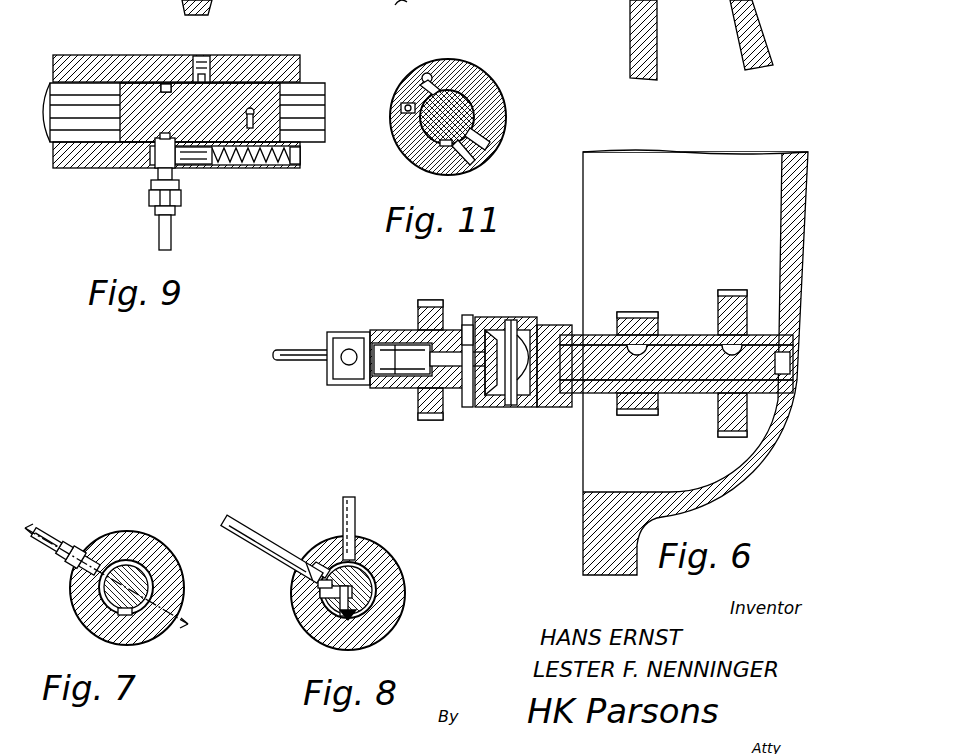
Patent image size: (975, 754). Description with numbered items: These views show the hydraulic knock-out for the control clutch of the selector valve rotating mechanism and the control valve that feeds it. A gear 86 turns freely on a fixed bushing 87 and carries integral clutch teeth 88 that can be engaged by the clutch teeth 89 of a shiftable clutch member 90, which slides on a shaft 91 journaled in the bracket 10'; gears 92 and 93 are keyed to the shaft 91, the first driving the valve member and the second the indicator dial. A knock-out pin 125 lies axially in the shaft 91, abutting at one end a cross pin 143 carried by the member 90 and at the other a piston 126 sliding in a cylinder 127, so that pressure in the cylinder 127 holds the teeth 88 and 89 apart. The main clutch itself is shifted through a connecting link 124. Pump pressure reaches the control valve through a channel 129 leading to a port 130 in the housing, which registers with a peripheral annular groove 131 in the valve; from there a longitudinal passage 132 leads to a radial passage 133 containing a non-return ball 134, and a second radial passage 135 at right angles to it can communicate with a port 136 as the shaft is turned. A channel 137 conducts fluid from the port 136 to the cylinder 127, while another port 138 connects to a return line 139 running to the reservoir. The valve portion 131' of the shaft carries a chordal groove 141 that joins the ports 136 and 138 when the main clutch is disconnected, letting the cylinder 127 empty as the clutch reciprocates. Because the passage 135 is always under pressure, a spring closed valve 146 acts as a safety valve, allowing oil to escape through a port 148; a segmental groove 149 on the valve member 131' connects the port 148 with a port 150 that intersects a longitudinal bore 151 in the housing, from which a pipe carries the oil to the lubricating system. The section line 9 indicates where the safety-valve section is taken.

In FIG. 7, the section line 9— 9 is at (110, 565).
In FIG. 6, the bracket 10' is at (695, 362).
In FIG. 6, the gear 86 is at (428, 300).
In FIG. 6, the fixed bushing 87 is at (420, 330).
In FIG. 6, the clutch teeth 88 is at (468, 315).
In FIG. 6, the clutch teeth 89 is at (480, 317).
In FIG. 6, the shiftable clutch member 90 is at (528, 317).
In FIG. 6, the shaft 91 is at (578, 335).
In FIG. 6, the gear 92 is at (638, 415).
In FIG. 6, the gear 93 is at (720, 425).
In FIG. 6, the connecting link 124 is at (630, 28).
In FIG. 6, the knock-out pin 125 is at (505, 405).
In FIG. 6, the piston 126 is at (404, 388).
In FIG. 6, the cylinder 127 is at (378, 332).
In FIG. 9, the channel 129 is at (158, 237).
In FIG. 7, the channel 129 is at (50, 553).
In FIG. 9, the port 130 is at (200, 112).
In FIG. 7, the port 130 is at (100, 565).
In FIG. 9, the peripheral annular groove 131 is at (184, 82).
In FIG. 7, the peripheral annular groove 131 is at (156, 610).
In FIG. 11, the valve portion 131' is at (488, 111).
In FIG. 8, the valve portion 131' is at (400, 585).
In FIG. 7, the longitudinal passage 132 is at (100, 635).
In FIG. 8, the radial passage 133 is at (325, 598).
In FIG. 8, the ball 134 is at (345, 620).
In FIG. 8, the radial passage 135 is at (298, 610).
In FIG. 8, the port 136 is at (318, 586).
In FIG. 6, the channel 137 is at (310, 350).
In FIG. 8, the channel 137 is at (238, 520).
In FIG. 8, the port 138 is at (372, 565).
In FIG. 8, the return line 139 is at (356, 525).
In FIG. 8, the chordal groove 141 is at (322, 568).
In FIG. 6, the cross pin 143 is at (540, 407).
In FIG. 9, the spring closed valve 146 is at (195, 168).
In FIG. 9, the port 148 is at (205, 165).
In FIG. 11, the port 148 is at (402, 145).
In FIG. 11, the segmental groove 149 is at (410, 100).
In FIG. 11, the port 150 is at (452, 60).
In FIG. 11, the longitudinal bore 151 is at (427, 73).